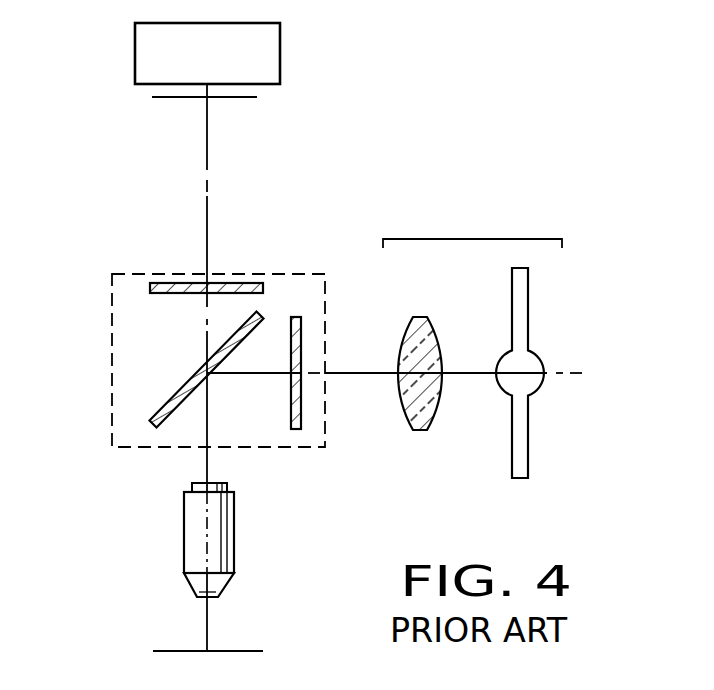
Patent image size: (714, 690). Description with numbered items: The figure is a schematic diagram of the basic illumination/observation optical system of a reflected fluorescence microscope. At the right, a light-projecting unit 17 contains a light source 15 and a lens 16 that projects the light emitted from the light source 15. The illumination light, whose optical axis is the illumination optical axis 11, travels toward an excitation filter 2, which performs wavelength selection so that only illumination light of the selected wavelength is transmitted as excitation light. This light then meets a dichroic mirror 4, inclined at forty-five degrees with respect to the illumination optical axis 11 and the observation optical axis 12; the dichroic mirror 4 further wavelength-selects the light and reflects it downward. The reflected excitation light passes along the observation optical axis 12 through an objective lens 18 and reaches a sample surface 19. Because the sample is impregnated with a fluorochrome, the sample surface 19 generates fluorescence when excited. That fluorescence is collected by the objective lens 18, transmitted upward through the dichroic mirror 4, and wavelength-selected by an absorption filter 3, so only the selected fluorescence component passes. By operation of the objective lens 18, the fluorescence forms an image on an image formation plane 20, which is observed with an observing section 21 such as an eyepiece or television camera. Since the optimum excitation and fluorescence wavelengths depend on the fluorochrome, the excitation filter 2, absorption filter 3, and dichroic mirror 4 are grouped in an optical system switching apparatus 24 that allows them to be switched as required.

The excitation filter 2 is at (302, 417).
The absorption filter 3 is at (150, 289).
The dichroic mirror 4 is at (166, 400).
The illumination optical axis 11 is at (377, 373).
The observation optical axis 12 is at (207, 206).
The light source 15 is at (525, 465).
The lens 16 is at (430, 423).
The light-projecting unit 17 is at (472, 239).
The objective lens 18 is at (180, 538).
The sample surface 19 is at (238, 650).
The image formation plane 20 is at (233, 97).
The observing section 21 is at (280, 52).
The optical system switching apparatus 24 is at (112, 350).